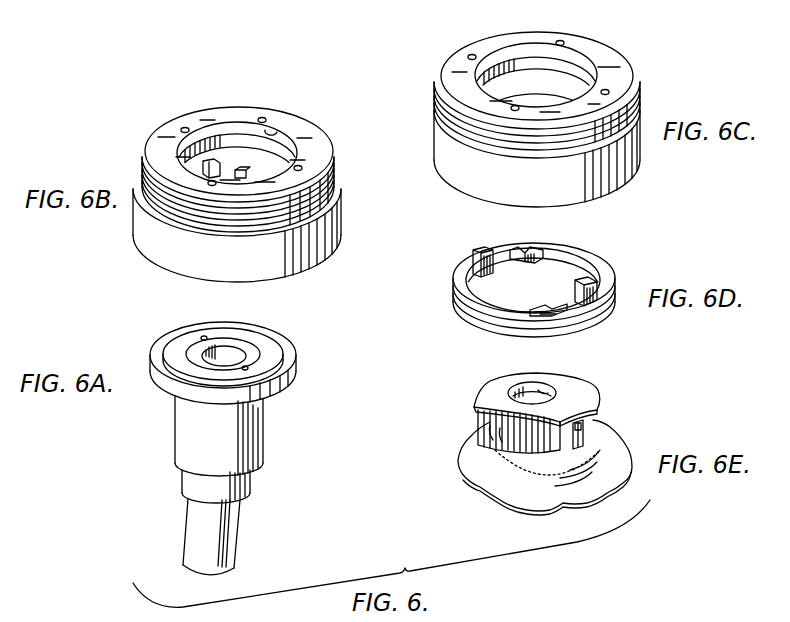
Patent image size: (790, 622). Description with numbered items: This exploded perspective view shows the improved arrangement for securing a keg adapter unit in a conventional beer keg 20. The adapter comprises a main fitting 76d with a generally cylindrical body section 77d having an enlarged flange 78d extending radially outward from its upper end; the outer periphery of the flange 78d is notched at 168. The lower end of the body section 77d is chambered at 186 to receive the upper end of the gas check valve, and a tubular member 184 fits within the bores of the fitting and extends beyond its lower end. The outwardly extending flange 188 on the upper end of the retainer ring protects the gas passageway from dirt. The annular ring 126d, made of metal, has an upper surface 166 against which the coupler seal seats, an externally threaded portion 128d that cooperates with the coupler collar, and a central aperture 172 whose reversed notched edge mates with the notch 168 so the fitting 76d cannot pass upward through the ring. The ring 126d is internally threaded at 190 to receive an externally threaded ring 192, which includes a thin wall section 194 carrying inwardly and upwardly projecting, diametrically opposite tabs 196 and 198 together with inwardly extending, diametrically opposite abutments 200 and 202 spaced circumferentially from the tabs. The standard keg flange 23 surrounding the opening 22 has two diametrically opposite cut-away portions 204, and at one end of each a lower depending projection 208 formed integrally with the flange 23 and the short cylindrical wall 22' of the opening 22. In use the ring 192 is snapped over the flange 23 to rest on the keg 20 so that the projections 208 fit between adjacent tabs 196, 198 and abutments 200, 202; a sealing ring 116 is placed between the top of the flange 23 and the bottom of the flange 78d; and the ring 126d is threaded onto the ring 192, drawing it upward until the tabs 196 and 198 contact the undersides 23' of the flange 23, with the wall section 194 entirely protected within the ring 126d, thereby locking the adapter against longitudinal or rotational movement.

In FIG. 6B, the upper surface 166 is at (170, 130).
In FIG. 6C, the upper surface 166 is at (478, 51).
In FIG. 6C, the internal threads 190 is at (543, 97).
In FIG. 6B, the threaded portion 128d is at (141, 172).
In FIG. 6C, the threaded portion 128d is at (634, 96).
In FIG. 6B, the annular ring 126d is at (170, 243).
In FIG. 6C, the annular ring 126d is at (468, 165).
In FIG. 6B, the tab 196 is at (205, 160).
In FIG. 6D, the tab 196 is at (481, 247).
In FIG. 6B, the abutment 200 is at (243, 170).
In FIG. 6D, the abutment 200 is at (528, 253).
In FIG. 6B, the central aperture 172 is at (275, 131).
In FIG. 6D, the tab 198 is at (594, 283).
In FIG. 6D, the thin wall section 194 is at (455, 305).
In FIG. 6D, the abutment 202 is at (541, 311).
In FIG. 6D, the externally threaded ring 192 is at (589, 336).
In FIG. 6E, the cut-away portion 204 is at (540, 385).
In FIG. 6E, the opening 22 is at (521, 399).
In FIG. 6E, the beer keg flange 23 is at (550, 396).
In FIG. 6E, the underside of keg flange 23' is at (601, 413).
In FIG. 6E, the depending projection 208 is at (584, 437).
In FIG. 6E, the cylindrical wall 22' is at (467, 431).
In FIG. 6E, the beer keg 20 is at (497, 482).
In FIG. 6A, the flange 78d is at (166, 346).
In FIG. 6A, the outwardly extending flange 188 is at (246, 345).
In FIG. 6A, the notched portion 168 is at (288, 368).
In FIG. 6A, the sealing ring 116 is at (284, 400).
In FIG. 6A, the main fitting 76d is at (170, 441).
In FIG. 6A, the cylindrical body section 77d is at (262, 435).
In FIG. 6A, the chambered part 186 is at (251, 479).
In FIG. 6A, the tubular member 184 is at (242, 528).